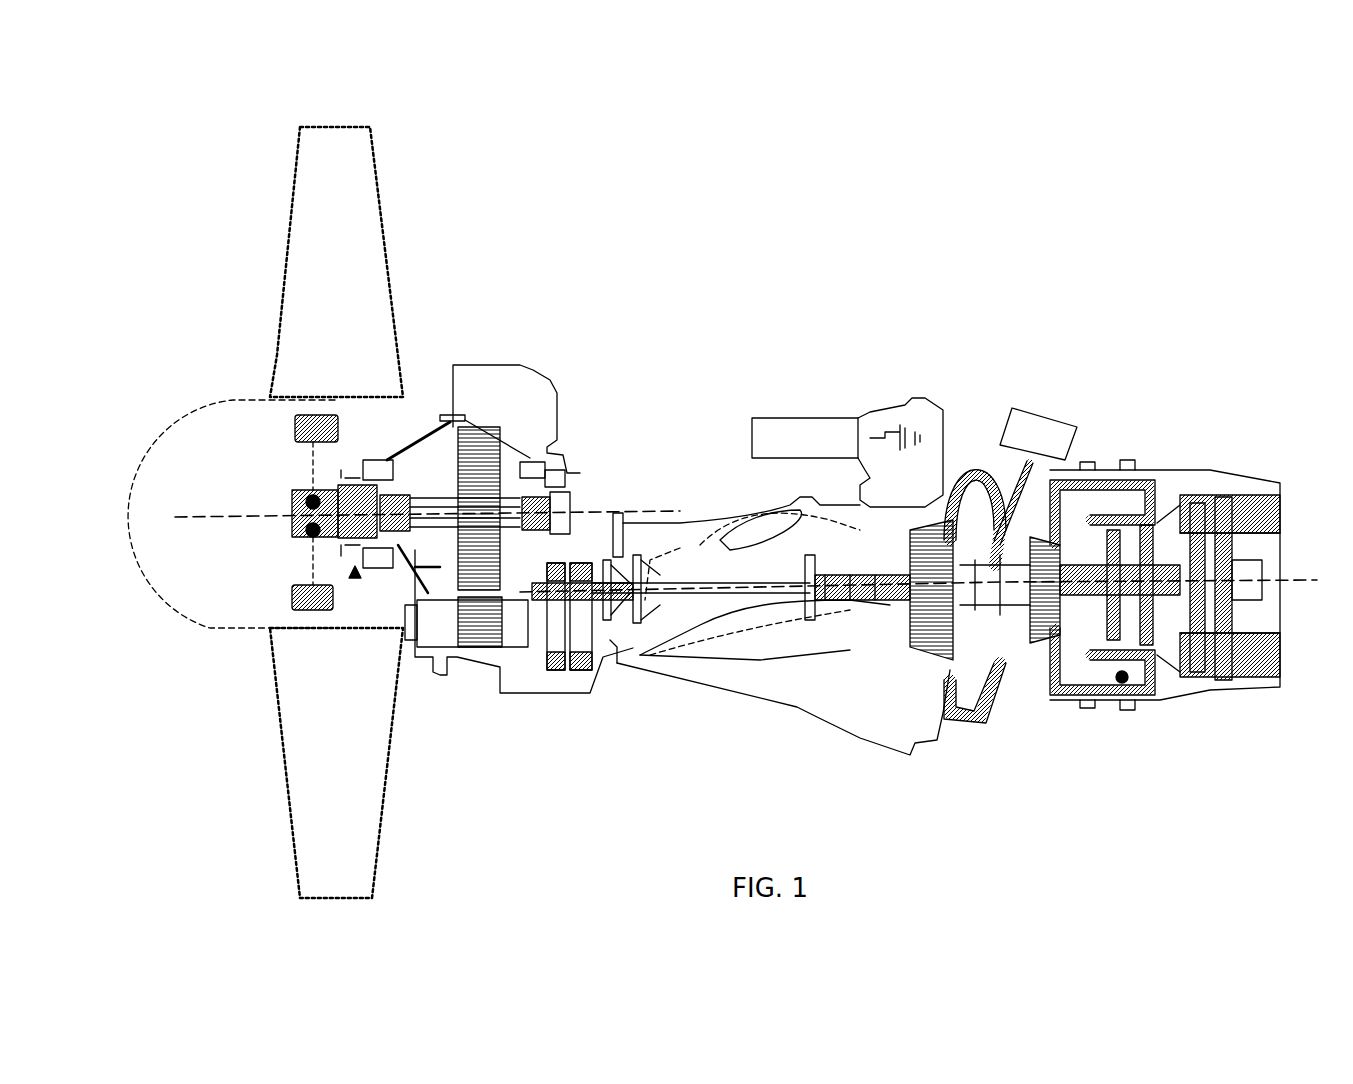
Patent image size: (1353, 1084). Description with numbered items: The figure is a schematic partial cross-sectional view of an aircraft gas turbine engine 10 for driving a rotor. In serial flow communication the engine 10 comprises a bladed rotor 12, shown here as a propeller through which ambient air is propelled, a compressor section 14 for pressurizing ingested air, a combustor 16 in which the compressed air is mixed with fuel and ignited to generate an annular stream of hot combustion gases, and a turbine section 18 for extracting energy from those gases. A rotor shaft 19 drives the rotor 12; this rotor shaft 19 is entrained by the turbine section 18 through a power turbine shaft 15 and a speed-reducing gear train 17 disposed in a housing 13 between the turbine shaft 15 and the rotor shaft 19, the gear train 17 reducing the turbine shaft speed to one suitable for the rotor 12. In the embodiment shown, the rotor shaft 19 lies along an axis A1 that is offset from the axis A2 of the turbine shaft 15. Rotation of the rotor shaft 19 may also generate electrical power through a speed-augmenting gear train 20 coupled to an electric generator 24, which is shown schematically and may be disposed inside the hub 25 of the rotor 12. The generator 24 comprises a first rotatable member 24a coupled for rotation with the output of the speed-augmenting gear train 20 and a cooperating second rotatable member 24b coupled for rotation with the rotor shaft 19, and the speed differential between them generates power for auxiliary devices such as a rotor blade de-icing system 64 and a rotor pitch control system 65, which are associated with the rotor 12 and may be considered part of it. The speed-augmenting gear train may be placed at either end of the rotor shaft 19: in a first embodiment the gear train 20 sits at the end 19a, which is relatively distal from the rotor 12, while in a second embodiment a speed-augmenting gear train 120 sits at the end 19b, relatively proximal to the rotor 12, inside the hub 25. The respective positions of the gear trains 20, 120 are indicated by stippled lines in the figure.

The aircraft gas turbine engine 10 is at (964, 316).
The bladed rotor 12 is at (226, 231).
The housing 13 is at (530, 470).
The compressor section 14 is at (1041, 725).
The power turbine shaft 15 is at (697, 593).
The combustor 16 is at (1122, 683).
The speed-reducing gear train 17 is at (517, 555).
The turbine section 18 is at (1236, 725).
The rotor shaft 19 is at (363, 475).
The end of the rotor shaft 19a is at (548, 487).
The end of the rotor shaft 19b is at (342, 560).
The speed-augmenting gear train 20 is at (353, 590).
The electric generator 24 is at (300, 487).
The first rotatable member 24a is at (306, 496).
The second rotatable member 24b is at (306, 533).
The hub 25 is at (348, 433).
The rotor blade de-icing system 64 is at (310, 415).
The rotor pitch control system 65 is at (313, 610).
The speed-augmenting gear train 120 is at (532, 455).
The axis A1 is at (274, 496).
The axis A2 is at (1300, 568).